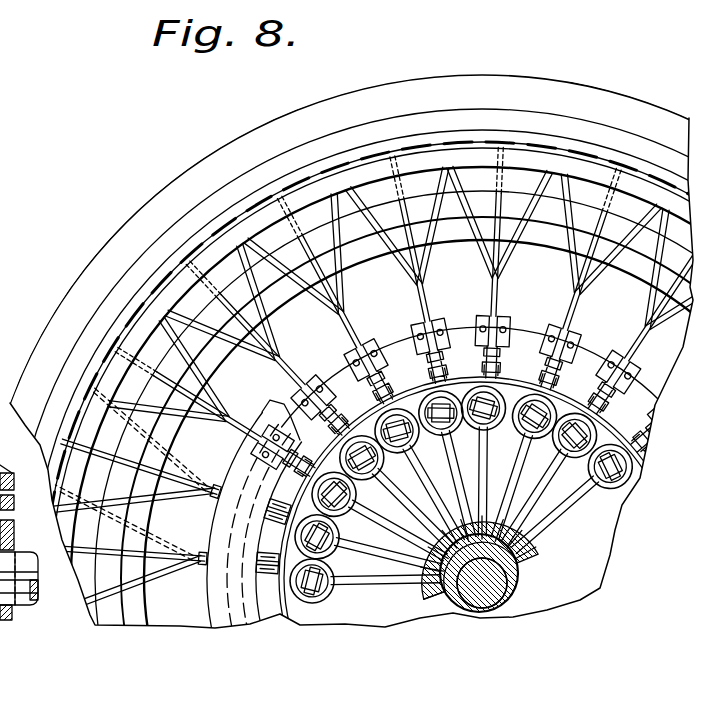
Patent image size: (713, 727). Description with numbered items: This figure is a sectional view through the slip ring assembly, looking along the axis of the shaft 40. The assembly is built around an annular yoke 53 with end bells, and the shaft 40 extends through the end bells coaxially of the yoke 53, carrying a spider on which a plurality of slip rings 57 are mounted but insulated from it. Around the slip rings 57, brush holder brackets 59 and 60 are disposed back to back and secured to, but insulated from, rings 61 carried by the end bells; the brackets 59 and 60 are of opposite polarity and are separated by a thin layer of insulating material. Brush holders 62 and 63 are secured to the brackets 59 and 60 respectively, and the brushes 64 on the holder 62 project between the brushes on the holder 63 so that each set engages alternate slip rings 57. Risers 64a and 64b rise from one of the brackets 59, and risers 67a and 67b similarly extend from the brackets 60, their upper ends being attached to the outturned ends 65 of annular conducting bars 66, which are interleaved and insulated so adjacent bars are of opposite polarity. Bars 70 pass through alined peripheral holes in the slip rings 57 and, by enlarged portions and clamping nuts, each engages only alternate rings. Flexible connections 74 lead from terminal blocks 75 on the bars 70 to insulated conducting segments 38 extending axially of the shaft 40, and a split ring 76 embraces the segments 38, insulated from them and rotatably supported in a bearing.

The insulated conducting segments 38 is at (535, 558).
The shaft 40 is at (473, 602).
The annular yoke 53 is at (98, 262).
The slip rings 57 is at (283, 612).
The brush holder bracket 59 is at (372, 352).
The brush holder bracket 60 is at (378, 344).
The rings 61 is at (590, 350).
The brush holder 62 is at (470, 338).
The brush holder 63 is at (442, 330).
The brushes 64 is at (528, 345).
The riser 64a is at (292, 383).
The riser 64b is at (280, 366).
The outturned ends 65 is at (285, 290).
The annular conducting bars 66 is at (222, 240).
The riser 67a is at (300, 372).
The riser 67b is at (280, 345).
The bars 70 is at (313, 603).
The flexible connections 74 is at (377, 564).
The terminal blocks 75 is at (318, 600).
The split ring 76 is at (19, 530).